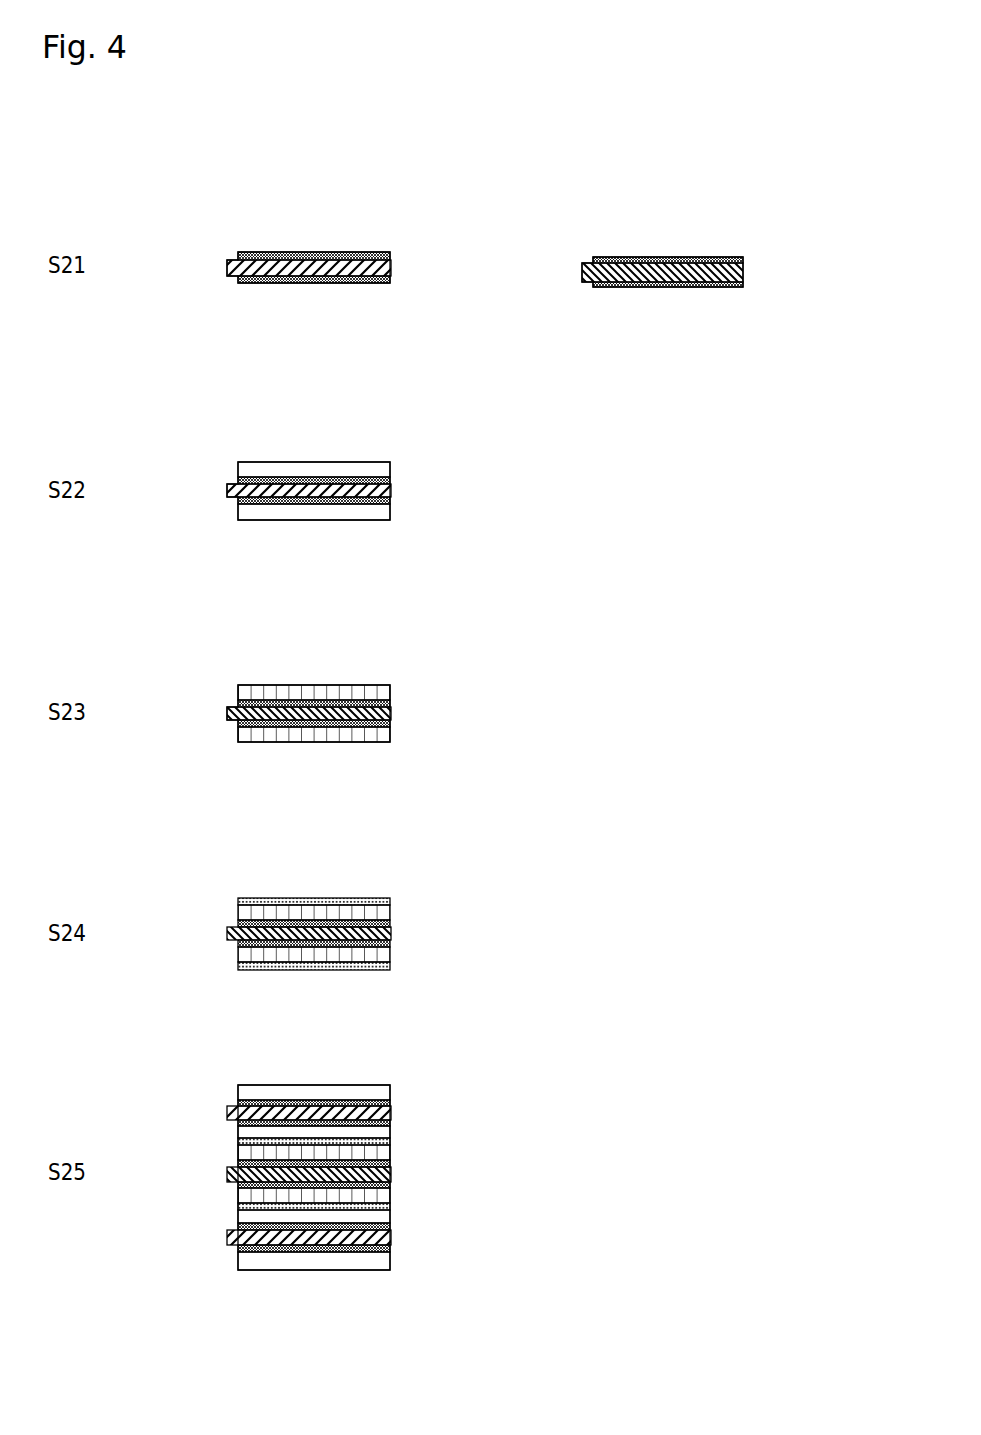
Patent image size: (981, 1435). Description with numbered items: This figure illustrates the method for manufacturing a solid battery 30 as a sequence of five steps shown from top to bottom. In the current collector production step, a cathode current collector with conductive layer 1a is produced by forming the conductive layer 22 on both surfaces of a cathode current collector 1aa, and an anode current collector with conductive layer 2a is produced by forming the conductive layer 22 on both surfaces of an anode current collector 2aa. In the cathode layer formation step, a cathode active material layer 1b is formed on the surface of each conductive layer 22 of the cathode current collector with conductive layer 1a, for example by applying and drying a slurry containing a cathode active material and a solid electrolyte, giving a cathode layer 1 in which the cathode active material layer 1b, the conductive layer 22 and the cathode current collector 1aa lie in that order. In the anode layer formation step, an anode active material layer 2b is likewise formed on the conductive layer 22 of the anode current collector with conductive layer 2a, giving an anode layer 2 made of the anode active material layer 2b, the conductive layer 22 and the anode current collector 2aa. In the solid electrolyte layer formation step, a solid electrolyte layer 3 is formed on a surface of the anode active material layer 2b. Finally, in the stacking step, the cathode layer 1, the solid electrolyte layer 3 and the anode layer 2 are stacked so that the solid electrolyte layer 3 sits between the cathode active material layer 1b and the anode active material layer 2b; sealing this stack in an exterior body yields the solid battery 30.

The cathode current collector with conductive layer 1a is at (355, 221).
The anode current collector with conductive layer 2a is at (708, 222).
The cathode layer 1 is at (328, 425).
The anode layer 2 is at (328, 647).
The cathode current collector 1aa is at (391, 268).
The anode current collector 2aa is at (743, 271).
The conductive layer 22 is at (390, 256).
The cathode active material layer 1b is at (390, 463).
The anode active material layer 2b is at (390, 687).
The solid electrolyte layer 3 is at (390, 898).
The solid battery 30 is at (591, 1183).